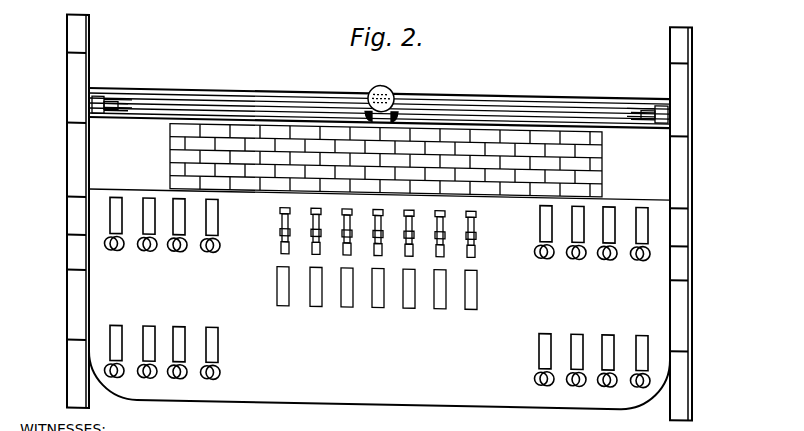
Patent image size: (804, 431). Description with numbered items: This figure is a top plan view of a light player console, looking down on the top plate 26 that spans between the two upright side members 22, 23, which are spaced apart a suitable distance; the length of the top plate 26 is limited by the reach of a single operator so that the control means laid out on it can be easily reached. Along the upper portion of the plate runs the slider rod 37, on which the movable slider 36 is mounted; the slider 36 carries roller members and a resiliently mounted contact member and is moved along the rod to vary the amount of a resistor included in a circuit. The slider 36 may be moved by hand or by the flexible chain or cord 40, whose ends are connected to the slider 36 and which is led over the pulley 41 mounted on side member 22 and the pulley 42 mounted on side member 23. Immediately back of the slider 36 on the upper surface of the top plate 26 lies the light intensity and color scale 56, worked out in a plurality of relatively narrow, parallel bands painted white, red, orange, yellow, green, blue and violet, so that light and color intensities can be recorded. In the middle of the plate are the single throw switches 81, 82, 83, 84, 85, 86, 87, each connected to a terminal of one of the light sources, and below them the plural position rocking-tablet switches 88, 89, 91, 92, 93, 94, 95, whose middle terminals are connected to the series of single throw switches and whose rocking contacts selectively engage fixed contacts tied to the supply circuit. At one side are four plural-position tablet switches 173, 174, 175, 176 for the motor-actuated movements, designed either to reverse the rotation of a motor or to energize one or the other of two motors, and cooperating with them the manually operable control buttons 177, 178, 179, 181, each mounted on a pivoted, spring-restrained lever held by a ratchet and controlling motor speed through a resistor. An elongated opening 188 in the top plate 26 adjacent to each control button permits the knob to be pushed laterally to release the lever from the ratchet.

The upright side member 22 is at (682, 217).
The upright side member 23 is at (66, 175).
The top plate 26 is at (285, 399).
The movable slider 36 is at (381, 80).
The slider rod 37 is at (553, 94).
The flexible chain or cord 40 is at (482, 104).
The pulley 41 is at (643, 101).
The pulley 42 is at (107, 99).
The light intensity and color scale 56 is at (172, 146).
The single throw switch 81 is at (474, 245).
The single throw switch 82 is at (438, 242).
The single throw switch 83 is at (407, 242).
The single throw switch 84 is at (376, 242).
The single throw switch 85 is at (345, 242).
The single throw switch 86 is at (314, 243).
The single throw switch 87 is at (281, 224).
The rocking-tablet switch 88 is at (471, 302).
The rocking-tablet switch 89 is at (440, 302).
The rocking-tablet switch 91 is at (409, 302).
The rocking-tablet switch 92 is at (378, 302).
The rocking-tablet switch 93 is at (347, 302).
The rocking-tablet switch 94 is at (316, 302).
The rocking-tablet switch 95 is at (283, 302).
The plural-position tablet switch 173 is at (537, 329).
The plural-position tablet switch 174 is at (571, 329).
The plural-position tablet switch 175 is at (602, 329).
The plural-position tablet switch 176 is at (634, 328).
The manually operable control button 177 is at (543, 377).
The manually operable control button 178 is at (577, 377).
The manually operable control button 179 is at (609, 377).
The manually operable control button 181 is at (642, 377).
The elongated opening 188 is at (538, 376).